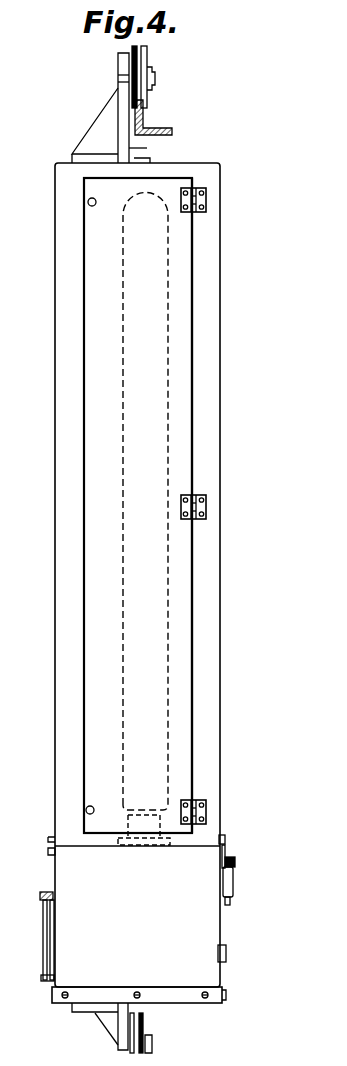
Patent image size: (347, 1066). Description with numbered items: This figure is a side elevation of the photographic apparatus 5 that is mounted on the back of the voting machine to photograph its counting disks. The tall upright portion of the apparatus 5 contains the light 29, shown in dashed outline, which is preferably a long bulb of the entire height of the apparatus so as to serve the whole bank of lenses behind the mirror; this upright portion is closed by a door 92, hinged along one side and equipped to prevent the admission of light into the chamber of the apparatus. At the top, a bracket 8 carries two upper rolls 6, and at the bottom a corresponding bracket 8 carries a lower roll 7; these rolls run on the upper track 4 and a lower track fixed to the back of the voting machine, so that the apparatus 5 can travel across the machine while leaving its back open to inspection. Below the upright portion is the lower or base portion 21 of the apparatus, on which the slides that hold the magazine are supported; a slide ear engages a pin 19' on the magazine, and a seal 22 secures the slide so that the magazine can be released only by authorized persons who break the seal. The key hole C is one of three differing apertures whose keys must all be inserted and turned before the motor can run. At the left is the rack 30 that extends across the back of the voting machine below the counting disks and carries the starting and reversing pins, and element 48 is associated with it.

The upper track 4 is at (145, 117).
The photographic apparatus 5 is at (52, 380).
The upper rolls 6 is at (148, 58).
The lower roll 7 is at (144, 1023).
The brackets 8 is at (129, 143).
The pin 19' is at (159, 841).
The base portion 21 is at (208, 917).
The seal 22 is at (235, 880).
The light 29 is at (168, 577).
The rack 30 is at (42, 898).
The rod foot 48 is at (42, 978).
The door 92 is at (185, 665).
The key hole C is at (229, 952).